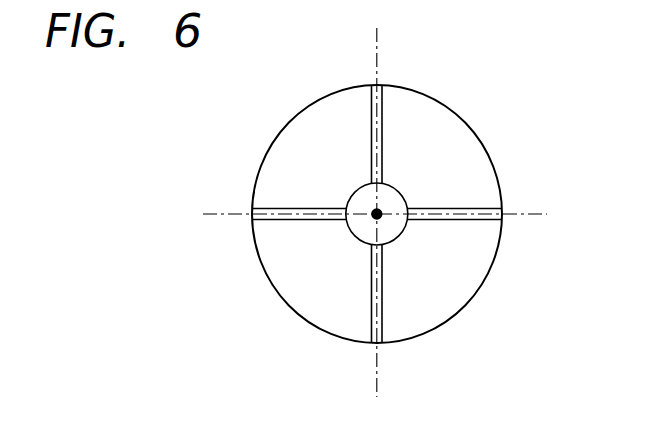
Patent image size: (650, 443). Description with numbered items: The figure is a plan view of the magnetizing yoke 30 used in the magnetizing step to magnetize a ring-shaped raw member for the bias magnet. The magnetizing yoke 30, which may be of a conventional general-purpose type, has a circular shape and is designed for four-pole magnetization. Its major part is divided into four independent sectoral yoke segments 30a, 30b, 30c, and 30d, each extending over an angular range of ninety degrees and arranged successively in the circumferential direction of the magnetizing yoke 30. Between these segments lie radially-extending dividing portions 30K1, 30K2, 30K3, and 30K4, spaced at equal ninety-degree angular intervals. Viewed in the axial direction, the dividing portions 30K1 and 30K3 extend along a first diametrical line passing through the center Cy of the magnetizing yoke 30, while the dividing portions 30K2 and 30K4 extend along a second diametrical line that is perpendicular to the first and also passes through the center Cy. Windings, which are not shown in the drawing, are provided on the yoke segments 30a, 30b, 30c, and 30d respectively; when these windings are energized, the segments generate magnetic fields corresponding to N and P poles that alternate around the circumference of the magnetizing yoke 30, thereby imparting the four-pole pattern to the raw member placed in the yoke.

The magnetizing yoke 30 is at (382, 214).
The yoke segment 30a is at (416, 110).
The yoke segment 30b is at (467, 257).
The yoke segment 30c is at (308, 307).
The yoke segment 30d is at (308, 138).
The dividing portion 30K1 is at (480, 208).
The dividing portion 30K2 is at (383, 320).
The dividing portion 30K3 is at (288, 220).
The dividing portion 30K4 is at (371, 103).
The center Cy is at (378, 212).